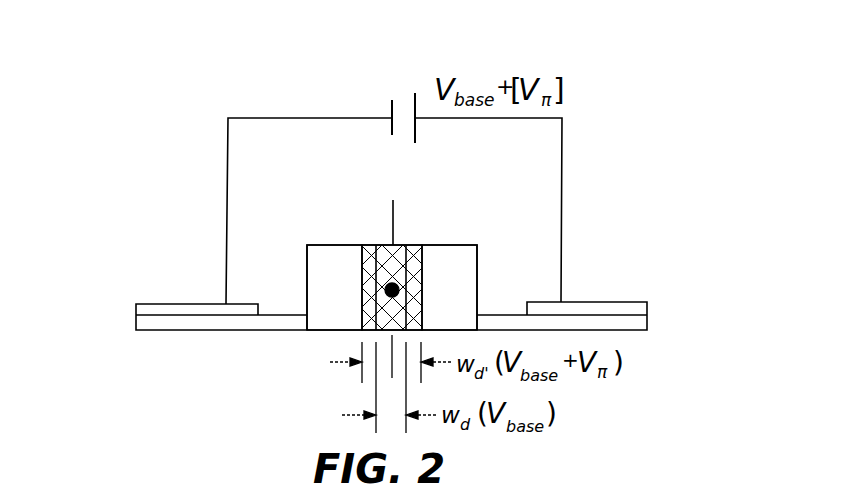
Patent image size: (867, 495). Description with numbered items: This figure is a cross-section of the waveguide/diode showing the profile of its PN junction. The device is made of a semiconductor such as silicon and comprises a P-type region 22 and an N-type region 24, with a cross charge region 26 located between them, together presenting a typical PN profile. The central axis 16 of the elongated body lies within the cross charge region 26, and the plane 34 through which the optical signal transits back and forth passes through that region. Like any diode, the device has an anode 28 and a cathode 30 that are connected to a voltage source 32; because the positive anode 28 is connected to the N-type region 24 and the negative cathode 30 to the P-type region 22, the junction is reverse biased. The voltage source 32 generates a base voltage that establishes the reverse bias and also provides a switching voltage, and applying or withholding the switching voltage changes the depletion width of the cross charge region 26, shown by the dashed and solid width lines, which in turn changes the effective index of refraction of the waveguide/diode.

The central axis 16 is at (372, 263).
The P-type region 22 is at (346, 299).
The N-type region 24 is at (466, 299).
The cross charge region 26 is at (393, 283).
The anode 28 is at (630, 304).
The cathode 30 is at (150, 309).
The voltage source 32 is at (402, 100).
The plane 34 is at (393, 200).